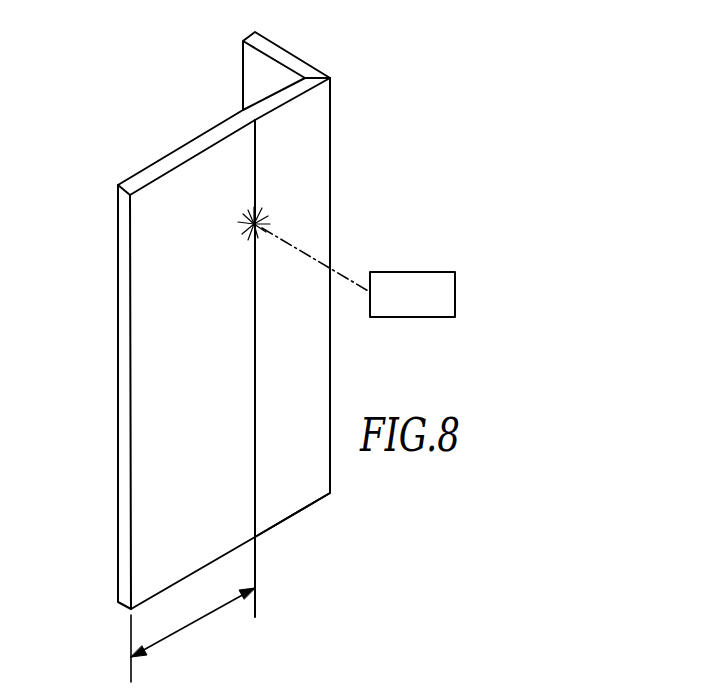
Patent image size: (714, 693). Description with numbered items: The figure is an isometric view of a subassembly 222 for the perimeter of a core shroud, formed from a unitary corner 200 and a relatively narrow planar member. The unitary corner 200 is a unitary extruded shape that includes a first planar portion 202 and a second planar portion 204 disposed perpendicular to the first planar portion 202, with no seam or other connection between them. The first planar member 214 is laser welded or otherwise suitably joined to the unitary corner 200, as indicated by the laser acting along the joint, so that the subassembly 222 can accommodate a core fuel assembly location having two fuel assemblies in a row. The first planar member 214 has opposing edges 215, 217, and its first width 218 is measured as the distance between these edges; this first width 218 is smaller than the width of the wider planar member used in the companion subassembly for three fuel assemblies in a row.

The unitary corner 200 is at (340, 185).
The first planar portion 202 is at (310, 134).
The second planar portion 204 is at (293, 52).
The first planar member 214 is at (221, 447).
The edge 215 is at (257, 377).
The edge 217 is at (121, 417).
The first width 218 is at (197, 624).
The subassembly 222 is at (359, 541).